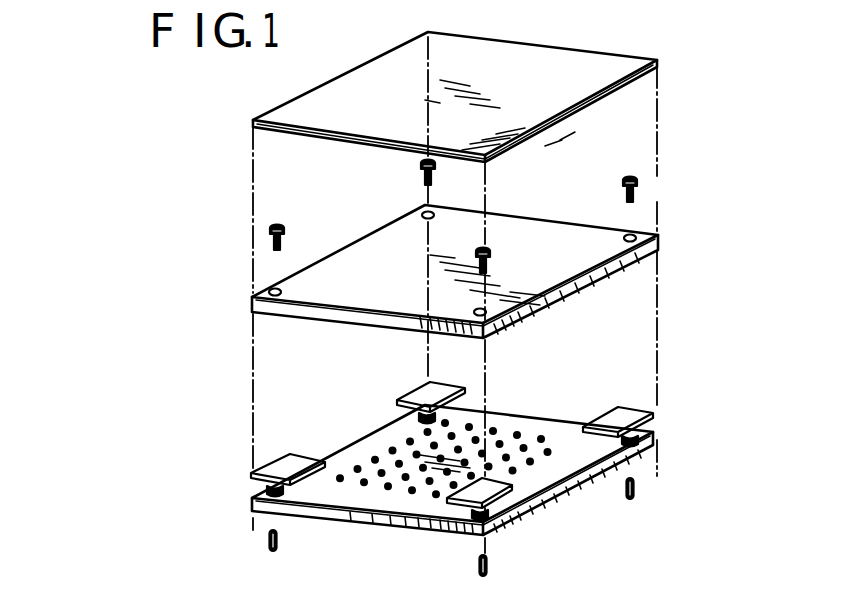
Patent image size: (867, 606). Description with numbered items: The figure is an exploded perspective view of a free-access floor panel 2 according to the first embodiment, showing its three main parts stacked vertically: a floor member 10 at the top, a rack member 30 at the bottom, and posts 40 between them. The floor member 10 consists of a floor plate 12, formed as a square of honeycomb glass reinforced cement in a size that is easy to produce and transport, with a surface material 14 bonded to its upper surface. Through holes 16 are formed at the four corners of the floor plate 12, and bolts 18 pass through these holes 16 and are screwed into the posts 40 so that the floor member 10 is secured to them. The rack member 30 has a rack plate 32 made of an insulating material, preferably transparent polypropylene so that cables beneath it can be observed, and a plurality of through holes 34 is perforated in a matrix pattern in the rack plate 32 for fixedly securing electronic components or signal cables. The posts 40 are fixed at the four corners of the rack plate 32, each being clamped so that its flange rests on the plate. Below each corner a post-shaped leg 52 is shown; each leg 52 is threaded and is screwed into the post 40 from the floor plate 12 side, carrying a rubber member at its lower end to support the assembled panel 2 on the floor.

The panel 2 is at (247, 304).
The floor member 10 is at (660, 182).
The floor plate 12 is at (659, 248).
The surface material 14 is at (628, 62).
The through holes 16 is at (430, 219).
The bolts 18 is at (420, 176).
The rack member 30 is at (535, 512).
The rack plate 32 is at (570, 494).
The through holes 34 is at (513, 430).
The posts 40 is at (400, 408).
The leg 52 is at (640, 488).